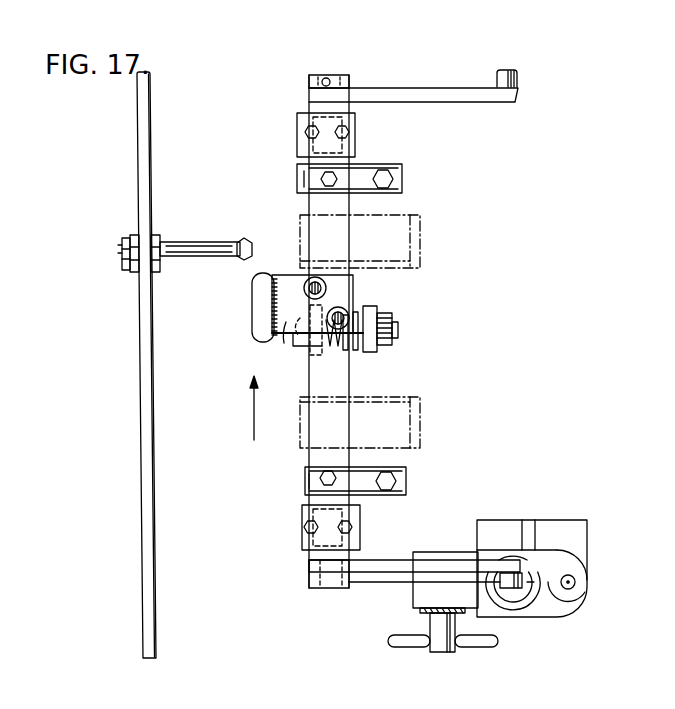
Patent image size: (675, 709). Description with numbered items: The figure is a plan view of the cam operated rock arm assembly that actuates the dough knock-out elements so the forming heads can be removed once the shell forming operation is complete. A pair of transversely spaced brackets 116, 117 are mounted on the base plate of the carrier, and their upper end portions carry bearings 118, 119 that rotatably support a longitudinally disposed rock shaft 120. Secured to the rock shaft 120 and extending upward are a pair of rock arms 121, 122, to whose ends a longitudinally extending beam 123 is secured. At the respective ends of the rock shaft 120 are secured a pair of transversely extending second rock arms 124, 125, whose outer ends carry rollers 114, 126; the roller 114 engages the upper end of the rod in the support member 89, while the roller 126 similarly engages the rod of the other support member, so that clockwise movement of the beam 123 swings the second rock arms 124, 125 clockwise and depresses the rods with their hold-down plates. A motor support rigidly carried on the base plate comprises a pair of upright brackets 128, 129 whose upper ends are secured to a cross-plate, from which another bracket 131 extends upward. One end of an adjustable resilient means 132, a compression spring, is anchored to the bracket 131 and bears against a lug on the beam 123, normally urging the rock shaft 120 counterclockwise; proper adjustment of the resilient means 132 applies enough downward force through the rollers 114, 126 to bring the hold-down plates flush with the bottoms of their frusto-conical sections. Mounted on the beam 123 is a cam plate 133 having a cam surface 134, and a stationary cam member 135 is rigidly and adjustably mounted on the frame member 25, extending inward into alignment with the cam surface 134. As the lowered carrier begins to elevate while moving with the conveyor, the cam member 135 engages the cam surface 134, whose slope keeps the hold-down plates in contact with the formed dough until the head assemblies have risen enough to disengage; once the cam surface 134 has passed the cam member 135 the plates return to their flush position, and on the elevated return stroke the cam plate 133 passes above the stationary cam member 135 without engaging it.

The frame member 25 is at (150, 460).
The support member 89 is at (529, 608).
The roller 114 is at (510, 598).
The bracket 116 is at (406, 482).
The bracket 117 is at (400, 169).
The bearing 118 is at (302, 491).
The bearing 119 is at (302, 181).
The rock shaft 120 is at (317, 76).
The rock arm 121 is at (360, 512).
The rock arm 122 is at (355, 148).
The beam 123 is at (343, 380).
The second rock arm 124 is at (391, 561).
The second rock arm 125 is at (453, 95).
The roller 126 is at (507, 72).
The upright bracket 128 is at (407, 415).
The upright bracket 129 is at (403, 248).
The bracket 131 is at (372, 310).
The adjustable resilient means 132 is at (346, 340).
The cam plate 133 is at (316, 319).
The cam surface 134 is at (252, 310).
The stationary cam member 135 is at (204, 240).